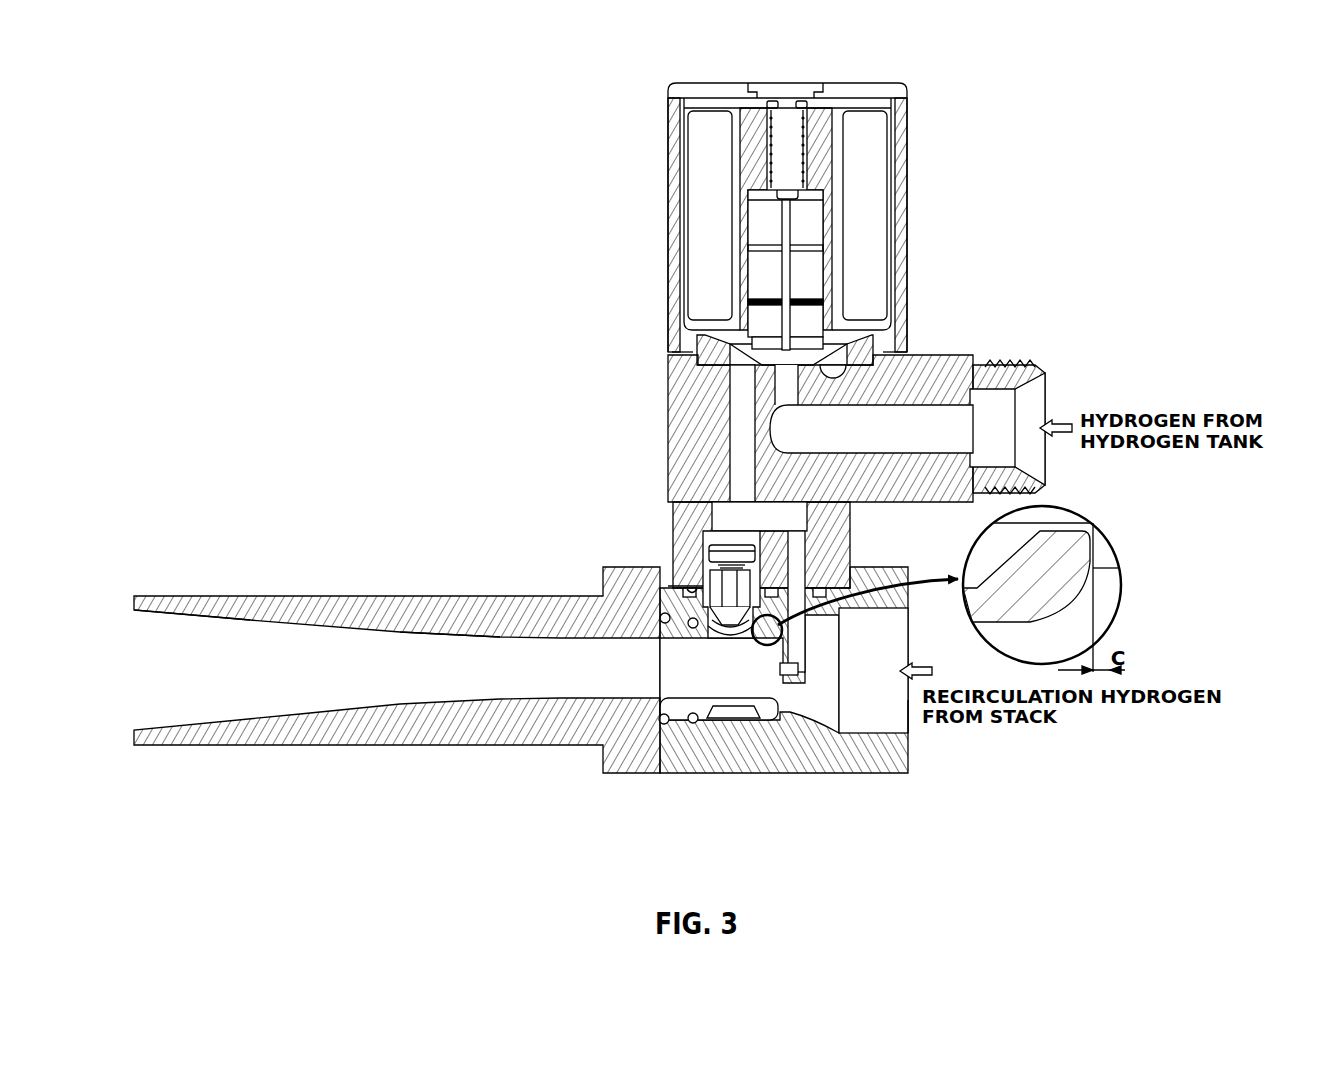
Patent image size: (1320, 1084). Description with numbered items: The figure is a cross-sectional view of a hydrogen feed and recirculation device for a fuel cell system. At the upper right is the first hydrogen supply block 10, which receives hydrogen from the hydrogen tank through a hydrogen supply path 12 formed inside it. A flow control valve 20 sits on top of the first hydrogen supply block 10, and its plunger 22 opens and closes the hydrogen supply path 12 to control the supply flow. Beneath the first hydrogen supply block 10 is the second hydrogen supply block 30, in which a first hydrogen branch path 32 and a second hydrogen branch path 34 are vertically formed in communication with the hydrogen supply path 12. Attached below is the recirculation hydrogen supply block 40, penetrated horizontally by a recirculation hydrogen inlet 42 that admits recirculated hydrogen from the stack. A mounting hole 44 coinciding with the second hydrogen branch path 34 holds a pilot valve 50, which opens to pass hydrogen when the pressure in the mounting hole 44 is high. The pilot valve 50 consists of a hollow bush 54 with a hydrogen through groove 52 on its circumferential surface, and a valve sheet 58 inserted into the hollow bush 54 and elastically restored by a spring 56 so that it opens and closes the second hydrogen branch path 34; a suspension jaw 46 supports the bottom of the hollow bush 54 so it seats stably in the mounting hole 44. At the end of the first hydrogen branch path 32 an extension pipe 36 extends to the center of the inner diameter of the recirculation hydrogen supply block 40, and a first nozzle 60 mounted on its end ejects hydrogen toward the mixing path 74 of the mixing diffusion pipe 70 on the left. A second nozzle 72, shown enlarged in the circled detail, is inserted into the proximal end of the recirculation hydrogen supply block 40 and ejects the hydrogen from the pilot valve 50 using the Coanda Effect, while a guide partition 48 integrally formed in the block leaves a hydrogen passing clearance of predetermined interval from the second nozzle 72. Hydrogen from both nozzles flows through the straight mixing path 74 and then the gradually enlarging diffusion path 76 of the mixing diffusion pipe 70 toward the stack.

The first hydrogen supply block 10 is at (948, 350).
The hydrogen supply path 12 is at (755, 388).
The flow control valve 20 is at (660, 252).
The plunger 22 is at (768, 345).
The second hydrogen supply block 30 is at (664, 506).
The first hydrogen branch path 32 is at (800, 562).
The second hydrogen branch path 34 is at (726, 530).
The extension pipe 36 is at (838, 640).
The recirculation hydrogen supply block 40 is at (810, 780).
The recirculation hydrogen inlet 42 is at (892, 714).
The mounting hole 44 is at (718, 630).
The suspension jaw 46 is at (668, 584).
The guide partition 48 is at (1098, 572).
The pilot valve 50 is at (690, 575).
The hydrogen through groove 52 is at (730, 612).
The hollow bush 54 is at (740, 647).
The spring 56 is at (792, 538).
The valve sheet 58 is at (710, 550).
The first nozzle 60 is at (772, 676).
The mixing diffusion pipe 70 is at (452, 590).
The second nozzle 72 is at (1058, 528).
The mixing path 74 is at (555, 648).
The diffusion path 76 is at (368, 642).